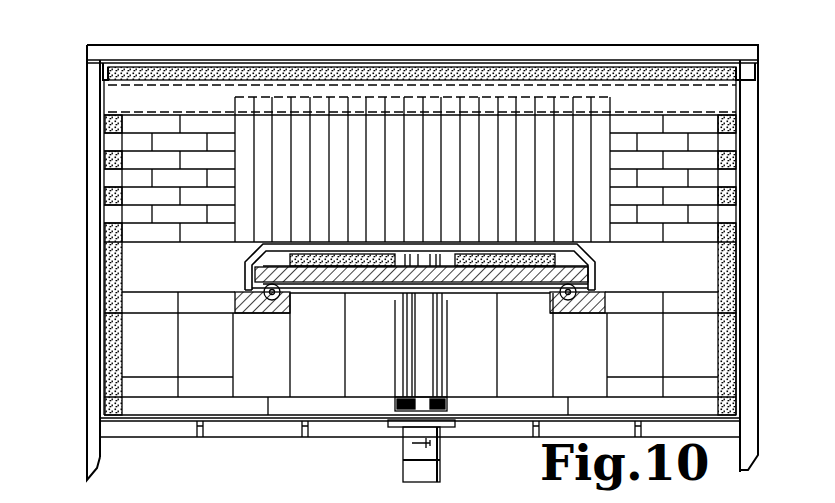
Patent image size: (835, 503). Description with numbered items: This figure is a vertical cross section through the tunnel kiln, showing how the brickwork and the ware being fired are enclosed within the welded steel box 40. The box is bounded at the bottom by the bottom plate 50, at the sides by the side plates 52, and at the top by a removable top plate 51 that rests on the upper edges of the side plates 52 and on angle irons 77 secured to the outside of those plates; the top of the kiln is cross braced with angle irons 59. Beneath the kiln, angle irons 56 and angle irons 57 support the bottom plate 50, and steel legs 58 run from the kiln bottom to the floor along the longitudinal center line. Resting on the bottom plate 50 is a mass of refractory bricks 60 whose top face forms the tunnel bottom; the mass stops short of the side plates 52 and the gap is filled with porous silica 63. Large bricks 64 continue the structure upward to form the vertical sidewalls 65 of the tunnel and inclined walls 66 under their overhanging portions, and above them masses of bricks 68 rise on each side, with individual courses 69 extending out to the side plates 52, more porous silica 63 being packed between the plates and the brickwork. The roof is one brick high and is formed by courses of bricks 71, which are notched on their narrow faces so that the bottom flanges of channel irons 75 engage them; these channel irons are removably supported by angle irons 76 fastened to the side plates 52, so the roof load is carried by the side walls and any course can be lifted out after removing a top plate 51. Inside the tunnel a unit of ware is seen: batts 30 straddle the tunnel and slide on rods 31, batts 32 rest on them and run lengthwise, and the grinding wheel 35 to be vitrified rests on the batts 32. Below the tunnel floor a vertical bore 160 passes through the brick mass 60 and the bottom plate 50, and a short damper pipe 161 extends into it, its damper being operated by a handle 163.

The steel box 40 is at (426, 45).
The angle irons 59 is at (113, 45).
The top plate 51 is at (185, 62).
The angle irons 77 is at (100, 72).
The angle irons 76 is at (104, 118).
The porous silica 63 is at (272, 68).
The channel irons 75 is at (683, 97).
The courses of bricks 71 is at (505, 125).
The individual courses 69 is at (116, 137).
The masses of bricks 68 is at (160, 175).
The large bricks 64 is at (128, 259).
The side plates 52 is at (100, 295).
The mass of refractory bricks 60 is at (322, 385).
The bottom plate 50 is at (340, 395).
The inclined walls 66 is at (252, 250).
The vertical sidewalls 65 is at (243, 277).
The batts 30 is at (358, 283).
The batts 32 is at (325, 283).
The grinding wheel 35 is at (458, 282).
The rods 31 is at (282, 295).
The vertical bore 160 is at (428, 357).
The handle 163 is at (392, 425).
The damper pipe 161 is at (440, 462).
The steel legs 58 is at (408, 478).
The angle irons 57 is at (197, 440).
The angle irons 56 is at (230, 437).